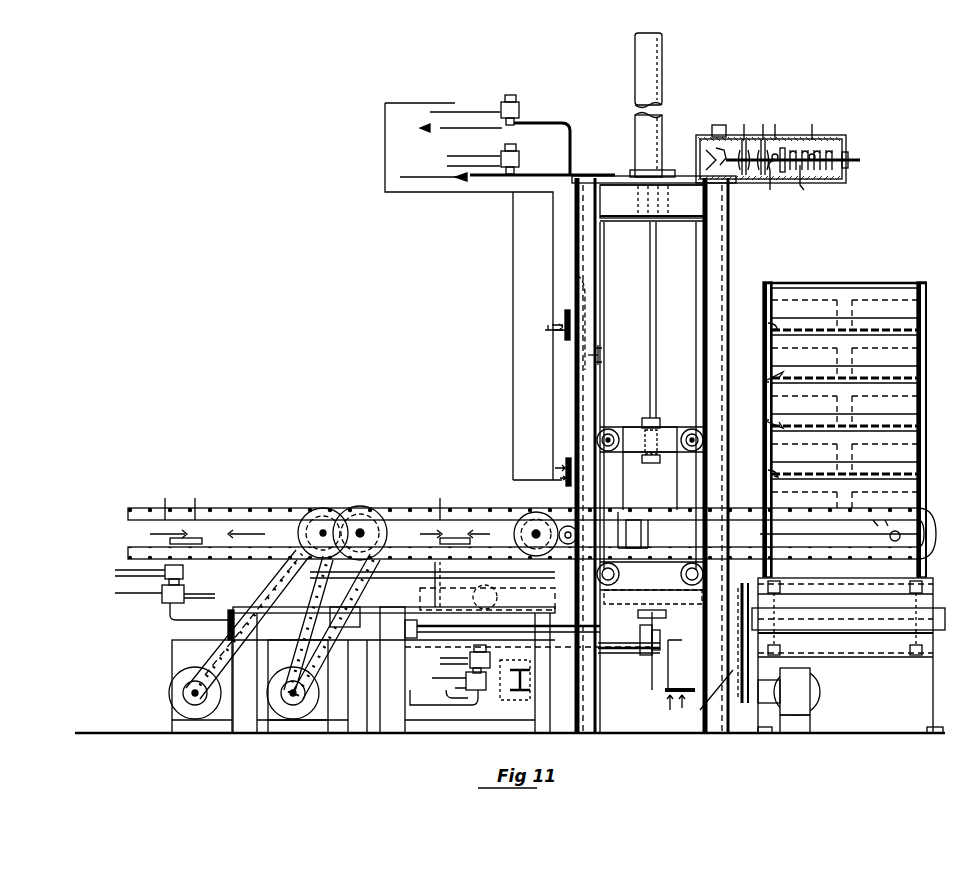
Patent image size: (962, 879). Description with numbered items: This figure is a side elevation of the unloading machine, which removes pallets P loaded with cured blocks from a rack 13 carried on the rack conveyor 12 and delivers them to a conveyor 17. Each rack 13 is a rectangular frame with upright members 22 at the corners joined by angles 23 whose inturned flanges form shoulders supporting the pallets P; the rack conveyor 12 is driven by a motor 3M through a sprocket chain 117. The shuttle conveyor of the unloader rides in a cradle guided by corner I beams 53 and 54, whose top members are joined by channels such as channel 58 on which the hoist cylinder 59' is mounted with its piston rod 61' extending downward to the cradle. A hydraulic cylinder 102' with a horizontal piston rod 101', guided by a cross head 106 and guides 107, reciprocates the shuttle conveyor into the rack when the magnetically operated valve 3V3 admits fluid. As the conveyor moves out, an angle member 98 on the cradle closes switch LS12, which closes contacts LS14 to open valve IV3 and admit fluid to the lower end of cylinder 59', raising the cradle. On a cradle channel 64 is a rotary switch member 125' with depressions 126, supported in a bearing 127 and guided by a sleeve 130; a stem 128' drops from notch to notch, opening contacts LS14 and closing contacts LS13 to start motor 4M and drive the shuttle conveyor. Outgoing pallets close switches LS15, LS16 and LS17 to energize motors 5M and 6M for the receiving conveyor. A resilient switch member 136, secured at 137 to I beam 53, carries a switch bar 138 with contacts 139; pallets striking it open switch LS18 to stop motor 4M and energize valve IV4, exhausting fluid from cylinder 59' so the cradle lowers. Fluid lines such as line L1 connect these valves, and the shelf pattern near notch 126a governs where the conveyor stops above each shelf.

The hoist cylinder 59' is at (677, 105).
The rotary switch member 125' is at (771, 132).
The bracket 126a is at (713, 126).
The depressions 126 is at (706, 160).
The encircling sleeve 130 is at (744, 124).
The stem 128' is at (817, 149).
The contacts LS13 is at (776, 193).
The contacts LS14 is at (806, 190).
The magnetically operated valve IV4 is at (519, 108).
The magnetically operated valve IV3 is at (519, 160).
The line L1 is at (513, 262).
The securing point 137 is at (577, 278).
The switch bar 138 is at (568, 312).
The switch LS18 is at (620, 365).
The resilient yieldable switch member 136 is at (590, 405).
The contacts 139 is at (556, 468).
The channel 58 is at (618, 222).
The I beam 54 is at (702, 243).
The I beam 53 is at (602, 275).
The piston rod 61' is at (665, 342).
The channel member 64 is at (622, 472).
The switch LS15 is at (633, 519).
The motor 4M is at (651, 583).
The conveyor 17 is at (261, 502).
The switch LS17 is at (177, 524).
The switch LS16 is at (470, 525).
The bearing 127 is at (827, 533).
The rack 13 is at (866, 281).
The upright members 22 is at (766, 282).
The pallet P is at (768, 320).
The angles 23 is at (761, 410).
The rack conveyor 12 is at (869, 666).
The motor 3M is at (817, 695).
The sprocket chain 117 is at (702, 712).
The hydraulic cylinder 102' is at (515, 615).
The guides 107 is at (432, 655).
The magnetically operated valve 3V3 is at (162, 595).
The motor 6M is at (172, 694).
The motor 5M is at (306, 700).
The piston rod 101' is at (629, 650).
The cross head 106 is at (650, 672).
The angle member 98 is at (666, 692).
The switch LS12 is at (687, 685).